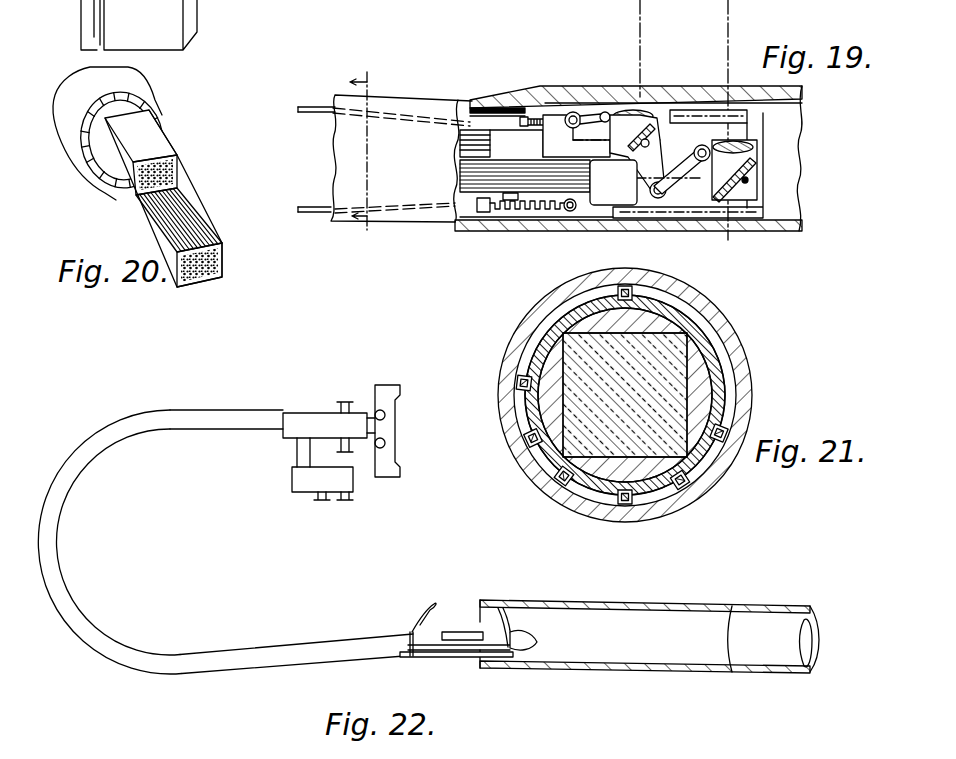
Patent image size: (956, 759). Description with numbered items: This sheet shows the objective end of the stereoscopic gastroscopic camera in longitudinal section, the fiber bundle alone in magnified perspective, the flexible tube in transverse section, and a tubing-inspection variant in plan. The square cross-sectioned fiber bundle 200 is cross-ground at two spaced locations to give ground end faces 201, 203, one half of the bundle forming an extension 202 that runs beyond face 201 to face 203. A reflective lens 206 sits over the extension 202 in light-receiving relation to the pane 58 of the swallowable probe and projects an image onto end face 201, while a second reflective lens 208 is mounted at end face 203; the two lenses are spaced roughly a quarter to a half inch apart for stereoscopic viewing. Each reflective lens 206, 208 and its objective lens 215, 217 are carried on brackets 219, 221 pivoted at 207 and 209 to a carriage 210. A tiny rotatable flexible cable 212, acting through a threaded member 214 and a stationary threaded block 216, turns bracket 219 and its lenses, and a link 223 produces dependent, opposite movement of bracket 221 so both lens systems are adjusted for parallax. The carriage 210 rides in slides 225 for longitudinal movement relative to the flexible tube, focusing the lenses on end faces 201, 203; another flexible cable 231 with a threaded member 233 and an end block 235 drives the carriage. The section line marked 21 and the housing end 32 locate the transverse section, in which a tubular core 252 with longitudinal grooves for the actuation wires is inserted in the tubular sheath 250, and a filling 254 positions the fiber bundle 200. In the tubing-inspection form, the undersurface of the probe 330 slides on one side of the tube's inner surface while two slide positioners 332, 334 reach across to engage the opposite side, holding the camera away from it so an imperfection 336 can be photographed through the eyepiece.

In FIG. 19, the section line 21- 21 is at (368, 157).
In FIG. 19, the housing end 32' 32 is at (340, 225).
In FIG. 19, the pane 58 is at (686, 90).
In FIG. 20, the fiber bundle 200 is at (147, 138).
In FIG. 19, the fiber bundle 200 is at (520, 150).
In FIG. 21, the fiber bundle 200 is at (598, 352).
In FIG. 20, the ground end face 201 is at (182, 154).
In FIG. 19, the ground end face 201 is at (488, 135).
In FIG. 20, the extension 202 is at (196, 212).
In FIG. 20, the ground end face 203 is at (216, 264).
In FIG. 19, the ground end face 203 is at (613, 183).
In FIG. 19, the reflective lens 206 is at (650, 135).
In FIG. 19, the pivot 207 is at (658, 152).
In FIG. 19, the second reflective lens 208 is at (735, 208).
In FIG. 19, the pivot 209 is at (757, 188).
In FIG. 19, the carriage 210 is at (682, 198).
In FIG. 19, the rotatable flexible cable 212 is at (425, 93).
In FIG. 19, the threaded member 214 is at (548, 113).
In FIG. 19, the objective lens 215 is at (640, 110).
In FIG. 19, the stationary threaded block 216 is at (578, 113).
In FIG. 19, the objective lens 217 is at (760, 142).
In FIG. 19, the bracket 219 is at (608, 113).
In FIG. 19, the bracket 221 is at (762, 168).
In FIG. 19, the link 223 is at (702, 185).
In FIG. 19, the slides 225 is at (622, 215).
In FIG. 19, the flexible cable 231 is at (470, 212).
In FIG. 21, the flexible cable 231 is at (626, 500).
In FIG. 19, the threaded member 233 is at (512, 213).
In FIG. 19, the end block 235 is at (546, 214).
In FIG. 21, the tubular sheath 250 is at (751, 412).
In FIG. 21, the tubular core 252 is at (734, 383).
In FIG. 21, the filling 254 is at (720, 370).
In FIG. 22, the probe 330 is at (470, 660).
In FIG. 22, the slide positioner 332 is at (425, 625).
In FIG. 22, the slide positioner 334 is at (510, 608).
In FIG. 22, the imperfection 336 is at (651, 612).